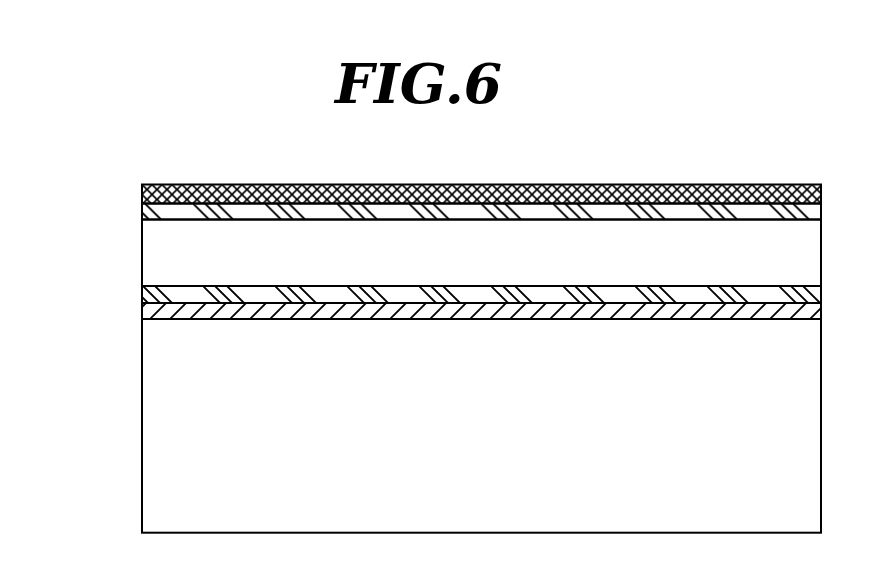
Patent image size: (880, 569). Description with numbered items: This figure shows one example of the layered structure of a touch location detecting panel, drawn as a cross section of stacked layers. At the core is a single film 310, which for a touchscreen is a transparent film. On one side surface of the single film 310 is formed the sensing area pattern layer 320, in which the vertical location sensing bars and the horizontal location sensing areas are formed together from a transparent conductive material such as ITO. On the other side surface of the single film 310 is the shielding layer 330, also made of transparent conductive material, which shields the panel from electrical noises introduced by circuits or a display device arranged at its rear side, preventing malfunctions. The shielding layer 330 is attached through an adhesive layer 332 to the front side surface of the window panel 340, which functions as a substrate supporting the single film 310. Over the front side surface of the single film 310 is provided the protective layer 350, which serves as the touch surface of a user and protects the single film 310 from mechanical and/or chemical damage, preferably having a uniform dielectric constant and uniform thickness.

The protective layer 350 is at (142, 189).
The sensing area pattern layer 320 is at (142, 211).
The single film 310 is at (142, 259).
The shielding layer 330 is at (142, 290).
The adhesive layer 332 is at (142, 312).
The window panel 340 is at (142, 427).